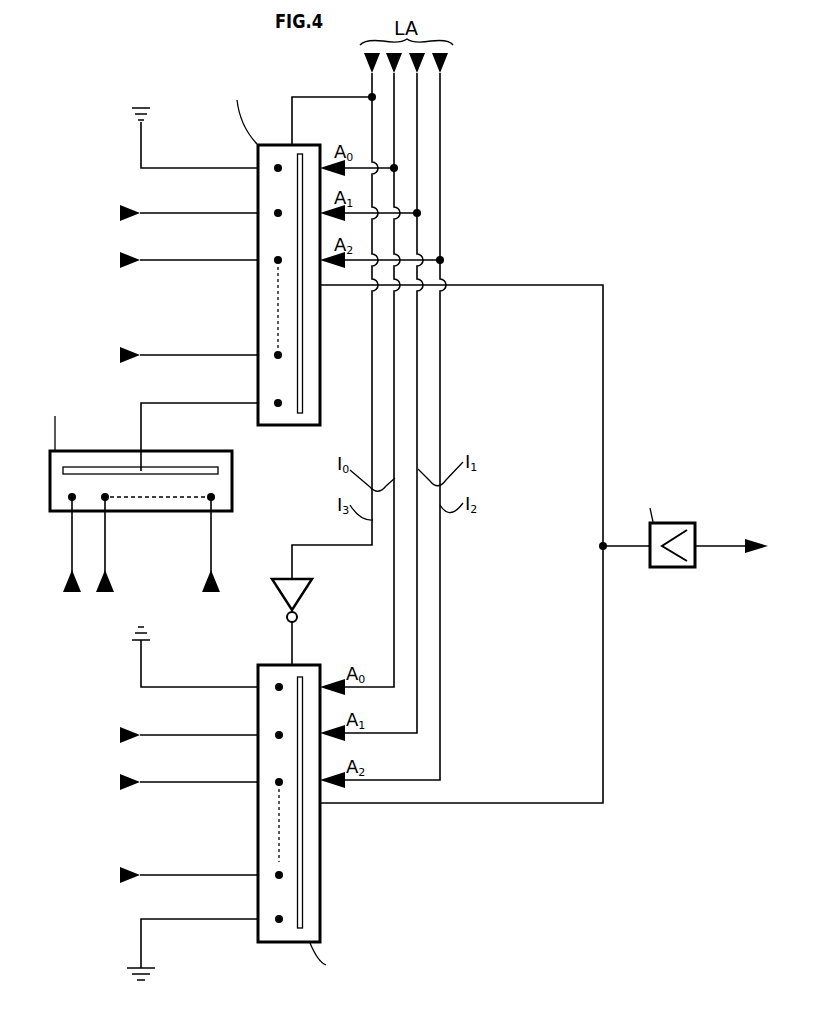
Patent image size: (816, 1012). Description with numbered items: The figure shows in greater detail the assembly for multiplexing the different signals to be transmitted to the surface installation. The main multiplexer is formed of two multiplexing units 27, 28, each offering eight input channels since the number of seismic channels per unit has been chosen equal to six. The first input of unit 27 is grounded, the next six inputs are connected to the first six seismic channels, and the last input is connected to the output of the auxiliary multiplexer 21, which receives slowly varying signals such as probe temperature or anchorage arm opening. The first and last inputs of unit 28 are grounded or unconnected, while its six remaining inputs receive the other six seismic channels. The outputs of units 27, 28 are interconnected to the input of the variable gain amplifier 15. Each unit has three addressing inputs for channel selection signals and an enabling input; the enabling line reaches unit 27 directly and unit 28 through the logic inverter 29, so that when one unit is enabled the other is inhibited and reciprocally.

The multiplexing unit 27 is at (265, 426).
The auxiliary multiplexer 21 is at (233, 481).
The logic inverter circuit 29 is at (282, 605).
The multiplexing unit 28 is at (256, 664).
The variable gain amplifier 15 is at (670, 568).